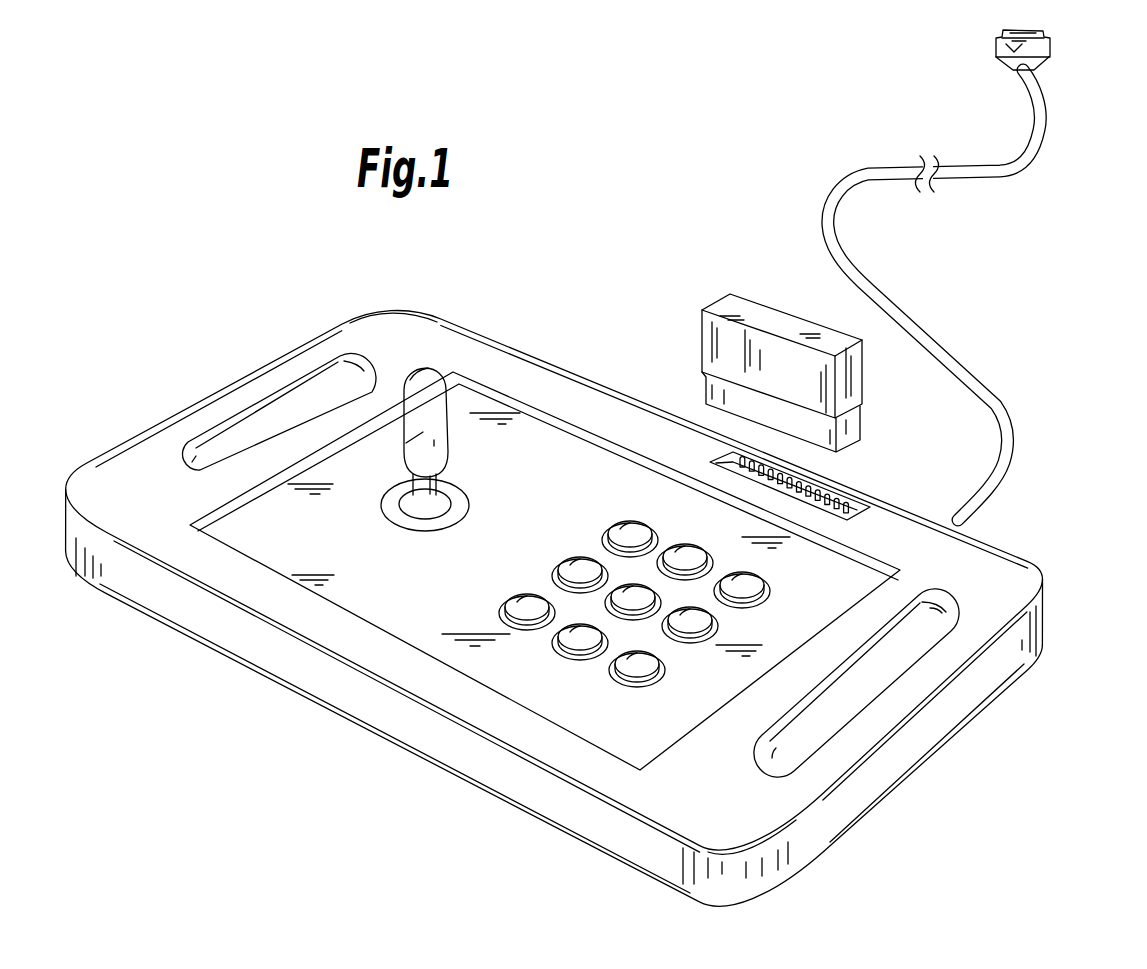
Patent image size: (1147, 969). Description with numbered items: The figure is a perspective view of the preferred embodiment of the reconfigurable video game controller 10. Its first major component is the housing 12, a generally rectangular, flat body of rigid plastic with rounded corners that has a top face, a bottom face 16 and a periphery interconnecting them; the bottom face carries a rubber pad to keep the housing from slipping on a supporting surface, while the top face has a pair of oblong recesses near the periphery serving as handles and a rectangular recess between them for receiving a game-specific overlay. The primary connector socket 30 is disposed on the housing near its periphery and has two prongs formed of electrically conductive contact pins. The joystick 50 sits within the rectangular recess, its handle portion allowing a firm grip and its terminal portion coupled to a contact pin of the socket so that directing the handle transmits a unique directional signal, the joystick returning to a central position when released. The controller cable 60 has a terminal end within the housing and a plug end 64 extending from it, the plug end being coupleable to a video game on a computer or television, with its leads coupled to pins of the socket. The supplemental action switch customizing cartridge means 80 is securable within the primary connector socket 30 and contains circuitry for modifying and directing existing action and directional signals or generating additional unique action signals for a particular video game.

The reconfigurable video game controller 10 is at (580, 583).
The housing 12 is at (1017, 572).
The bottom face 16 is at (857, 827).
The primary connector socket 30 is at (832, 494).
The joystick 50 is at (425, 432).
The controller cable 60 is at (1007, 178).
The plug end 64 is at (1047, 55).
The supplemental action switch customizing cartridge means 80 is at (855, 376).